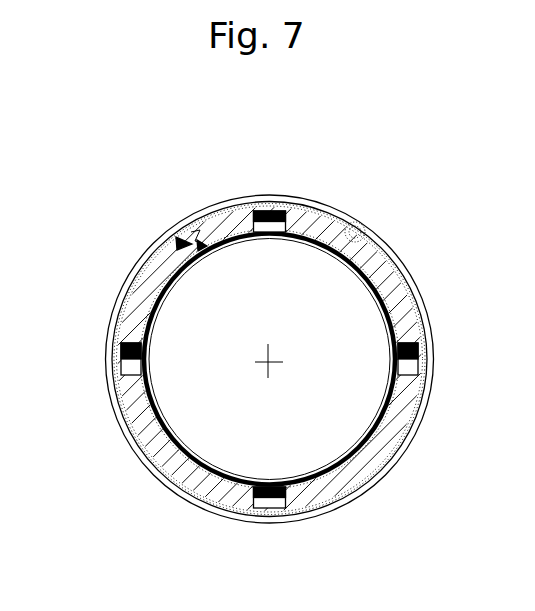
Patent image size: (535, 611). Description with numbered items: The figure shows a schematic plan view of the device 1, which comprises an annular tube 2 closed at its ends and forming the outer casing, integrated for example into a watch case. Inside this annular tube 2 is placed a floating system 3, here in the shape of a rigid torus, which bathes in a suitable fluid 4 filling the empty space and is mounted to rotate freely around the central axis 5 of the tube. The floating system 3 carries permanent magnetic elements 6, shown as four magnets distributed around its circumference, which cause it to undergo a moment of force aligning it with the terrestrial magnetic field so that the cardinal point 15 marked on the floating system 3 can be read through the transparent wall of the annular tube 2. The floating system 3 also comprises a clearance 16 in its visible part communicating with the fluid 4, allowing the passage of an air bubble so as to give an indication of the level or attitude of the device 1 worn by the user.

The device 1 is at (64, 252).
The annular tube 2 is at (220, 517).
The floating system 3 is at (132, 424).
The fluid 4 is at (355, 453).
The central axis 5 is at (272, 354).
The permanent magnetic elements 6 is at (265, 210).
The cardinal point 15 is at (176, 243).
The clearance 16 is at (356, 229).